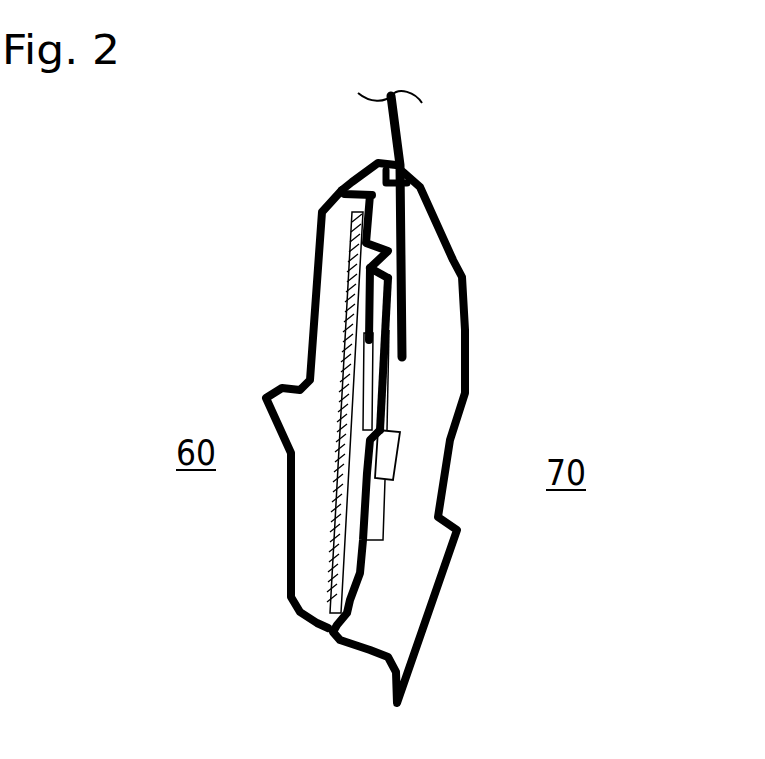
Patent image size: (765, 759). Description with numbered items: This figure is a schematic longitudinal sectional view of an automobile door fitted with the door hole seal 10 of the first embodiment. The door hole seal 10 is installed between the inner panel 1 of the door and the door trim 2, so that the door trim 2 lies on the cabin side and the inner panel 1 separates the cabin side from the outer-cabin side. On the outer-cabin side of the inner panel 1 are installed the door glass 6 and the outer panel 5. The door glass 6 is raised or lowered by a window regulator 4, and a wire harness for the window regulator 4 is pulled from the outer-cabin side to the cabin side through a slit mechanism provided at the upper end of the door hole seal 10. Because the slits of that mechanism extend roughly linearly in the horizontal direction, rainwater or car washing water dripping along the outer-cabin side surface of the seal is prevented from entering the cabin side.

The inner panel 1 is at (376, 240).
The door trim 2 is at (310, 322).
The window regulator 4 is at (383, 405).
The outer panel 5 is at (467, 310).
The door glass 6 is at (400, 150).
The door hole seal 10 is at (347, 280).